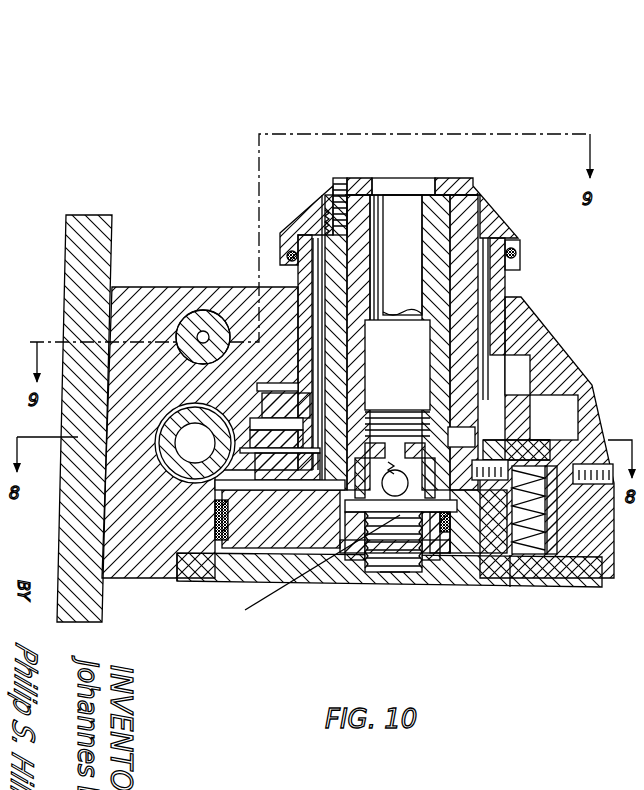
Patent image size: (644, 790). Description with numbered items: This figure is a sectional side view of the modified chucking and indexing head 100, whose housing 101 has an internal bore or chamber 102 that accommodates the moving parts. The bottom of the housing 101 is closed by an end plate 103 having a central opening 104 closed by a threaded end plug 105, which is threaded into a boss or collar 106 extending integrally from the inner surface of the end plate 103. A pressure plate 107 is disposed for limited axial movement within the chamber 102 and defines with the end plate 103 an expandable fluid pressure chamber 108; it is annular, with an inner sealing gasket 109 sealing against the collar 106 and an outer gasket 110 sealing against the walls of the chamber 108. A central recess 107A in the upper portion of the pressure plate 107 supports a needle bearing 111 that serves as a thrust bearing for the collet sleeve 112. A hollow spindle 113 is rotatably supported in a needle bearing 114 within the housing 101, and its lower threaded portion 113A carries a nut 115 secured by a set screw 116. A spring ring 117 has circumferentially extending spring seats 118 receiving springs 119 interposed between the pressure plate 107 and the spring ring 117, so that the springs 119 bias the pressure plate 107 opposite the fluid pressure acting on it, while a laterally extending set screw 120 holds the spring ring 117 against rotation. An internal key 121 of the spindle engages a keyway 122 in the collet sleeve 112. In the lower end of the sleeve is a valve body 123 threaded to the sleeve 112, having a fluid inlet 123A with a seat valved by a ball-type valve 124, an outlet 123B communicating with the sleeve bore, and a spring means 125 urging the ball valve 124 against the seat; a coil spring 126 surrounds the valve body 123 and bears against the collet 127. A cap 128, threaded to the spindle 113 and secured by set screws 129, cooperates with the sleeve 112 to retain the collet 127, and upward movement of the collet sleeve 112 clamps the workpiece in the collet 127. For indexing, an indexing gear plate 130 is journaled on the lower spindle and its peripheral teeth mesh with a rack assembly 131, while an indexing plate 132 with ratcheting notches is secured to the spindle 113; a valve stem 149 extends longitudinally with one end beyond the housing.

The chucking and indexing head 100 is at (608, 205).
The housing 101 is at (159, 565).
The bore or chamber 102 is at (570, 415).
The end plate 103 is at (510, 500).
The central opening 104 is at (395, 552).
The threaded end plug 105 is at (432, 525).
The boss or collar 106 is at (355, 548).
The pressure plate 107 is at (240, 505).
The central recess 107A is at (445, 535).
The expandable fluid pressure chamber 108 is at (500, 553).
The inner sealing gasket 109 is at (330, 565).
The outer gasket 110 is at (588, 575).
The needle bearing 111 is at (245, 612).
The collet sleeve 112 is at (490, 300).
The hollow spindle 113 is at (515, 250).
The threaded portion 113A is at (306, 340).
The needle bearing 114 is at (497, 320).
The nut 115 is at (285, 466).
The set screw 116 is at (470, 550).
The spring ring 117 is at (592, 467).
The spring seats 118 is at (520, 495).
The spring 119 is at (556, 545).
The set screw 120 is at (560, 458).
The internal key 121 is at (508, 352).
The keyway 122 is at (540, 398).
The valve body 123 is at (394, 576).
The fluid inlet 123A is at (368, 565).
The outlet 123B is at (500, 362).
The ball-type valve 124 is at (345, 505).
The spring means 125 is at (362, 452).
The coil spring 126 is at (372, 414).
The collet 127 is at (408, 315).
The cap 128 is at (500, 222).
The set screws 129 is at (470, 195).
The indexing gear plate 130 is at (222, 392).
The rack assembly 131 is at (182, 462).
The indexing plate 132 is at (472, 456).
The valve stem 149 is at (206, 325).